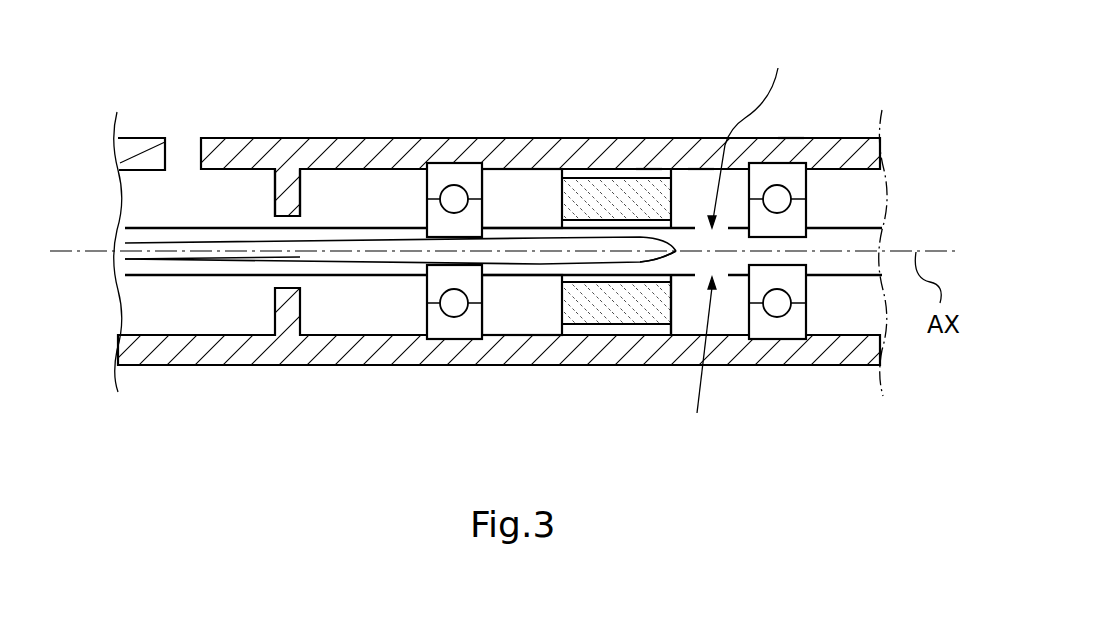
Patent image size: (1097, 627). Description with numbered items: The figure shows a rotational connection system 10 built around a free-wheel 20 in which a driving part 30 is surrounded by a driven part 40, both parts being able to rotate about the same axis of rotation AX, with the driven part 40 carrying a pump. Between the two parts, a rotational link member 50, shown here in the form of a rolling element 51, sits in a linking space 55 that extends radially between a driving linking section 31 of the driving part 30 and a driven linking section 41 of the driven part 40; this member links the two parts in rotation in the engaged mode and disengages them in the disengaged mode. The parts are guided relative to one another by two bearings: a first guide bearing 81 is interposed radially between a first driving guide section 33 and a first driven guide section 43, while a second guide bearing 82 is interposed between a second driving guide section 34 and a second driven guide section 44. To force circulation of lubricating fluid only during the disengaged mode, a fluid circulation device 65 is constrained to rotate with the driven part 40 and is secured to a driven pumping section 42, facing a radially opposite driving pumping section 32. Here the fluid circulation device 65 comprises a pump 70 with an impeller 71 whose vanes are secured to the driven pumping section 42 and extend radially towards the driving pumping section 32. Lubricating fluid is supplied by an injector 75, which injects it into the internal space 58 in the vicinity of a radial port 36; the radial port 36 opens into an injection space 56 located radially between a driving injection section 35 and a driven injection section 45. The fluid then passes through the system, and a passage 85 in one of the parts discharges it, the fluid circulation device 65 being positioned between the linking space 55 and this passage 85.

The rotational connection system 10 is at (878, 105).
The free-wheel 20 is at (618, 128).
The driving part 30 is at (853, 228).
The driving linking section 31 is at (595, 233).
The driving pumping section 32 is at (224, 228).
The first driving guide section 33 is at (413, 240).
The second driving guide section 34 is at (800, 237).
The driving injection section 35 is at (690, 230).
The radial port 36 is at (737, 242).
The driven part 40 is at (858, 168).
The driven linking section 41 is at (648, 169).
The driven pumping section 42 is at (321, 138).
The first driven guide section 43 is at (425, 164).
The second driven guide section 44 is at (790, 163).
The driven injection section 45 is at (701, 168).
The rotational link member 50 is at (616, 251).
The rolling element 51 is at (657, 211).
The linking space 55 is at (680, 313).
The injection space 56 is at (723, 310).
The internal space 58 is at (232, 267).
The fluid circulation device 65 is at (275, 122).
The pump 70 is at (275, 122).
The impeller 71 is at (275, 191).
The injector 75 is at (667, 258).
The first guide bearing 81 is at (455, 333).
The second guide bearing 82 is at (777, 330).
The passage 85 is at (183, 150).